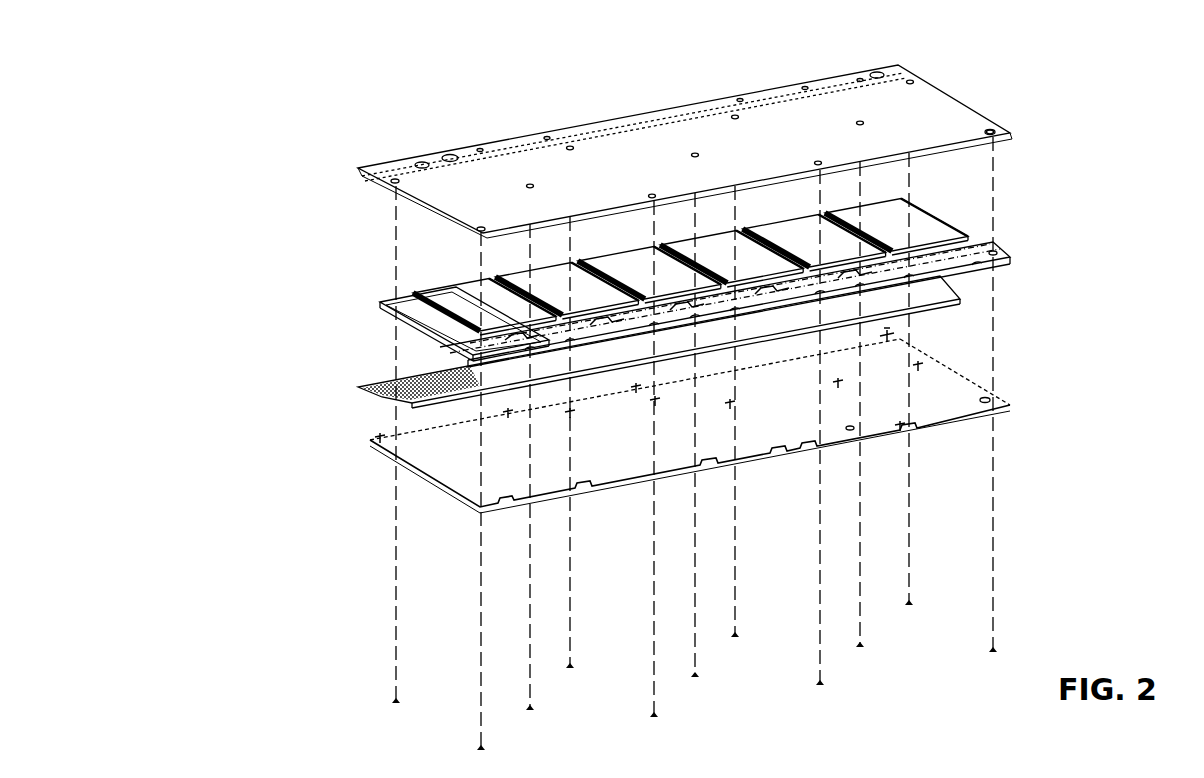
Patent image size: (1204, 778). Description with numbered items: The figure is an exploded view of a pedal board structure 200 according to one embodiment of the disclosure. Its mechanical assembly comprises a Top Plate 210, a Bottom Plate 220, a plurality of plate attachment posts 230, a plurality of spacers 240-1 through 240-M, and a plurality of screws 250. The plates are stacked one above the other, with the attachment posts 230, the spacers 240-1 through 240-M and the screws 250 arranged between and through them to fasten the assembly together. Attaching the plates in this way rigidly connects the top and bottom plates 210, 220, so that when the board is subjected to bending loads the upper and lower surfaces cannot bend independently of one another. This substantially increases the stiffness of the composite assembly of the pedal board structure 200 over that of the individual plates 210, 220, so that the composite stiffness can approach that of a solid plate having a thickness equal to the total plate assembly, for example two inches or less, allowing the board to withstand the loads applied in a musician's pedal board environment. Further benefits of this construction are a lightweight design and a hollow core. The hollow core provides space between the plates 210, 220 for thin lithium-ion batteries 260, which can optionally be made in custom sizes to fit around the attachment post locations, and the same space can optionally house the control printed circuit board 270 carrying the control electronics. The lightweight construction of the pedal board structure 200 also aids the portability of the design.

The pedal board structure 200 is at (418, 114).
The Top Plate 210 is at (985, 110).
The Bottom Plate 220 is at (366, 453).
The plate attachment posts 230 is at (998, 140).
The spacer 240-1 is at (410, 326).
The spacer 240-M is at (896, 337).
The screws 250 is at (478, 748).
The thin lithium-ion batteries 260 is at (410, 293).
The control printed circuit board (PCB) 270 is at (356, 385).